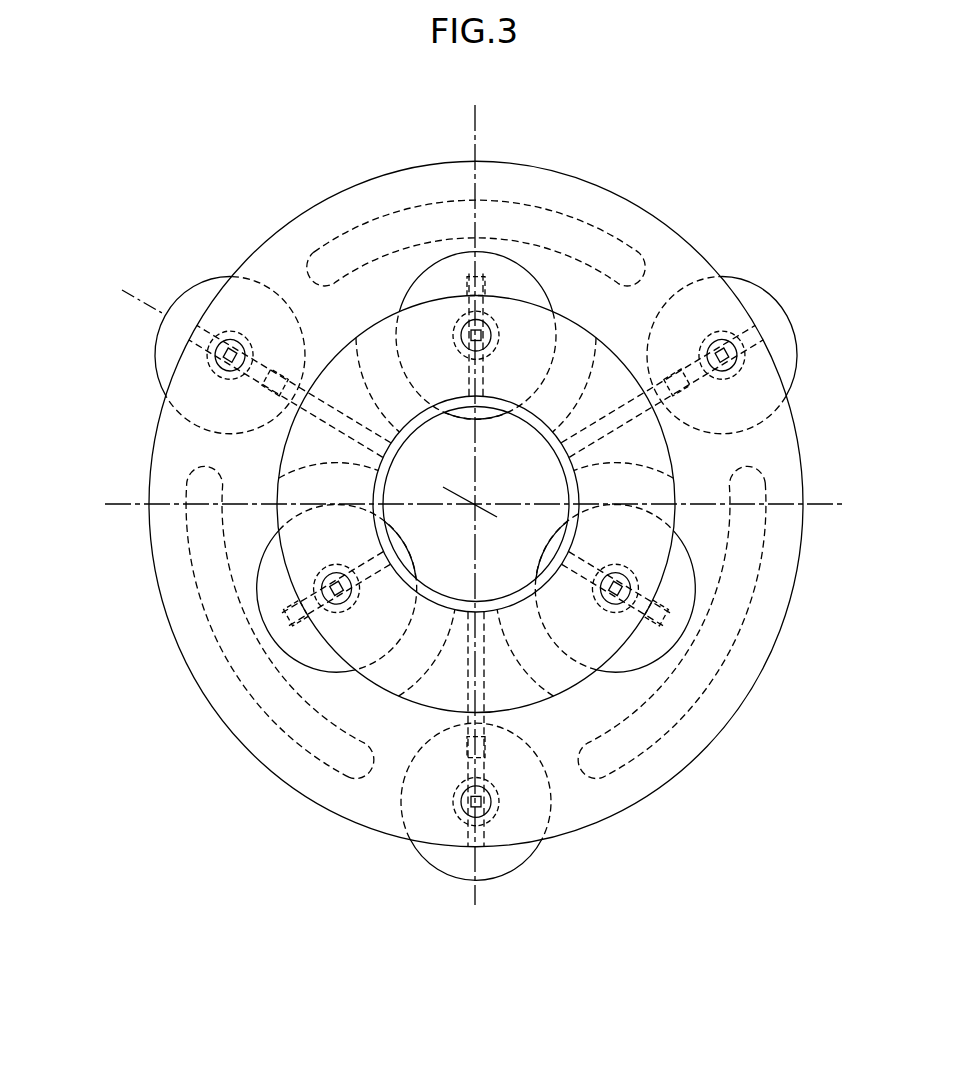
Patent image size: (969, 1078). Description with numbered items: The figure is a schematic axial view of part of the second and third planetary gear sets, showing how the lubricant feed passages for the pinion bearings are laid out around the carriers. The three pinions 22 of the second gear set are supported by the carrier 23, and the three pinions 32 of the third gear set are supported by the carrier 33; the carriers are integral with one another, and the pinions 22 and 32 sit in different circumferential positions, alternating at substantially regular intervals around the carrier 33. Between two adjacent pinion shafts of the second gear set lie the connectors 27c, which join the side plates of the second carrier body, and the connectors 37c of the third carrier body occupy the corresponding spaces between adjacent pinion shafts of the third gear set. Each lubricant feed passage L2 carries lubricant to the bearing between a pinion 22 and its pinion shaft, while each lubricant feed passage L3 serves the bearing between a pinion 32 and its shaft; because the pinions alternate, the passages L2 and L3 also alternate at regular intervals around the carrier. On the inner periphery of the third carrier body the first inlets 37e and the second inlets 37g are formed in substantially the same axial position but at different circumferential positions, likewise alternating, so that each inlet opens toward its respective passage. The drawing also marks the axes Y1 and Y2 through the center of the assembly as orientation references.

The pinion 22 is at (781, 299).
The carrier 23 is at (668, 222).
The carrier 33 is at (623, 351).
The pinion 32 is at (527, 267).
The connector 27c is at (494, 198).
The first inlet 37e is at (386, 455).
The second inlet 37g is at (484, 415).
The connector 37c is at (530, 670).
The lubricant feed passage L2 is at (322, 421).
The lubricant feed passage L3 is at (485, 385).
The inclined axis Y1 is at (130, 306).
The vertical axis Y2 is at (470, 112).